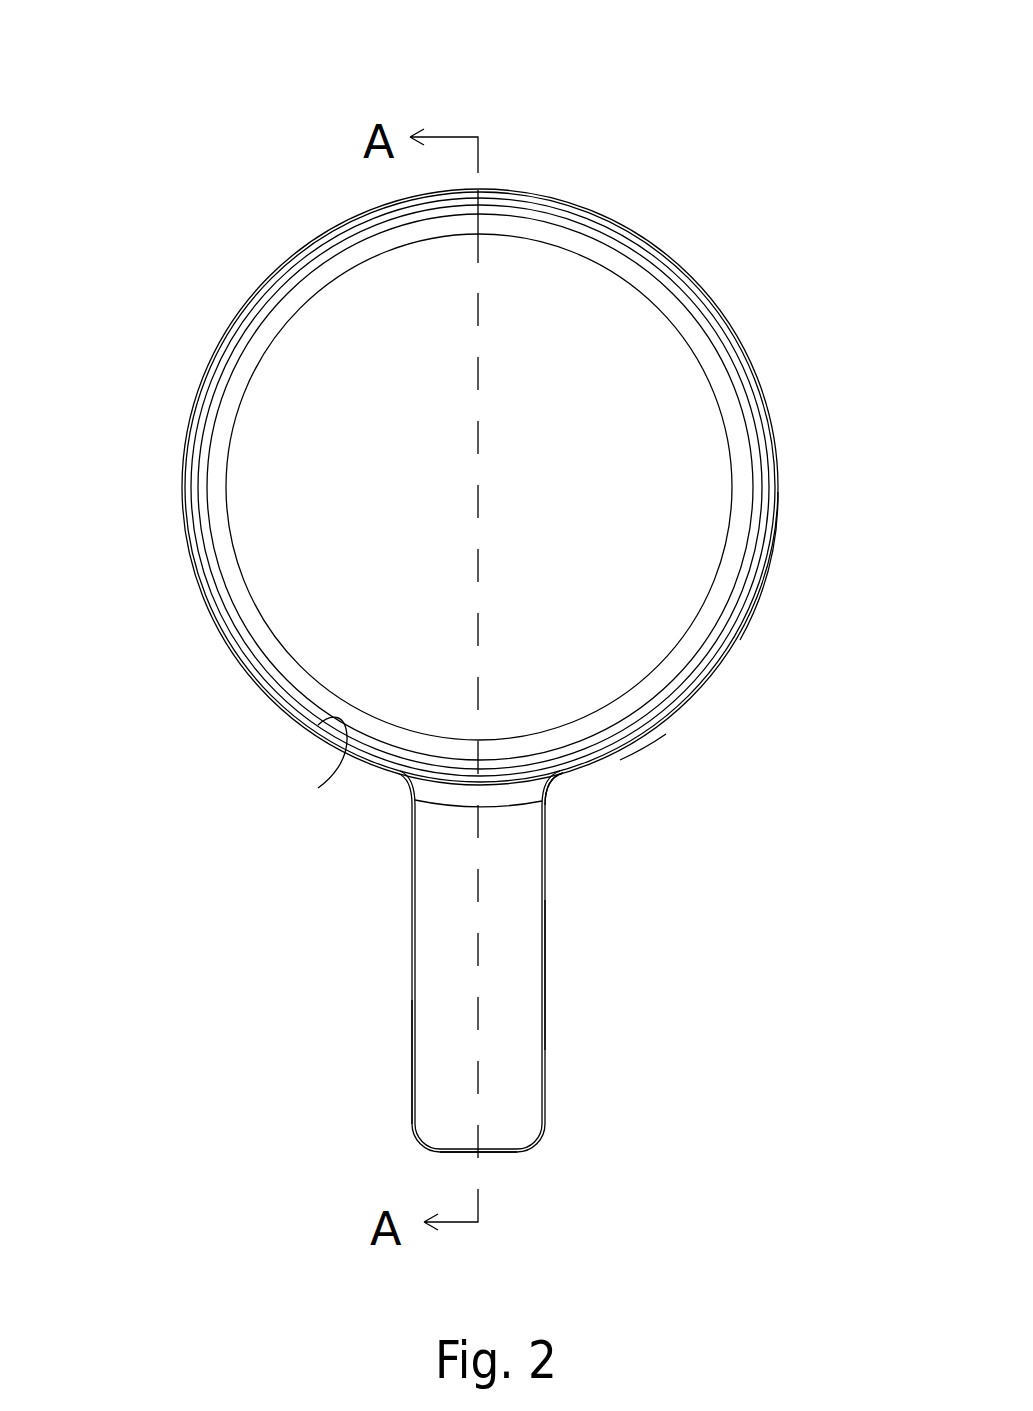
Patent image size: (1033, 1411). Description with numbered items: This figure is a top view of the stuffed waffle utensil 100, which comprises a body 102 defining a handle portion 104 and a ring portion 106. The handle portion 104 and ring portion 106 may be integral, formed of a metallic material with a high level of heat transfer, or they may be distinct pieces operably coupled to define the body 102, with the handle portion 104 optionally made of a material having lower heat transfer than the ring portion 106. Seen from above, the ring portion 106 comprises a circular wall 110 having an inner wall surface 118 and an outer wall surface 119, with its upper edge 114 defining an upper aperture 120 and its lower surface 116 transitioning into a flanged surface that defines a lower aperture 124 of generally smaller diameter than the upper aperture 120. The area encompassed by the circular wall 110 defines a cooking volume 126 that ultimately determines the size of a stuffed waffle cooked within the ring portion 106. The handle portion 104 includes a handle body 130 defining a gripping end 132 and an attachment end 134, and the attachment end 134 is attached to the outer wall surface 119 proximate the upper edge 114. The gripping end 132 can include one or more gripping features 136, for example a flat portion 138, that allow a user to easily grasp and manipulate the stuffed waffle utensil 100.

The stuffed waffle utensil 100 is at (150, 118).
The body 102 is at (253, 690).
The handle portion 104 is at (538, 1075).
The ring portion 106 is at (553, 193).
The circular wall 110 is at (778, 492).
The upper edge 114 is at (757, 586).
The lower surface 116 is at (752, 542).
The inner wall surface 118 is at (205, 545).
The outer wall surface 119 is at (662, 731).
The upper aperture 120 is at (695, 676).
The lower aperture 124 is at (680, 328).
The cooking volume 126 is at (658, 482).
The handle body 130 is at (543, 975).
The gripping end 132 is at (517, 1155).
The attachment end 134 is at (545, 790).
The gripping feature 136 is at (515, 1030).
The flat portion 138 is at (440, 1073).